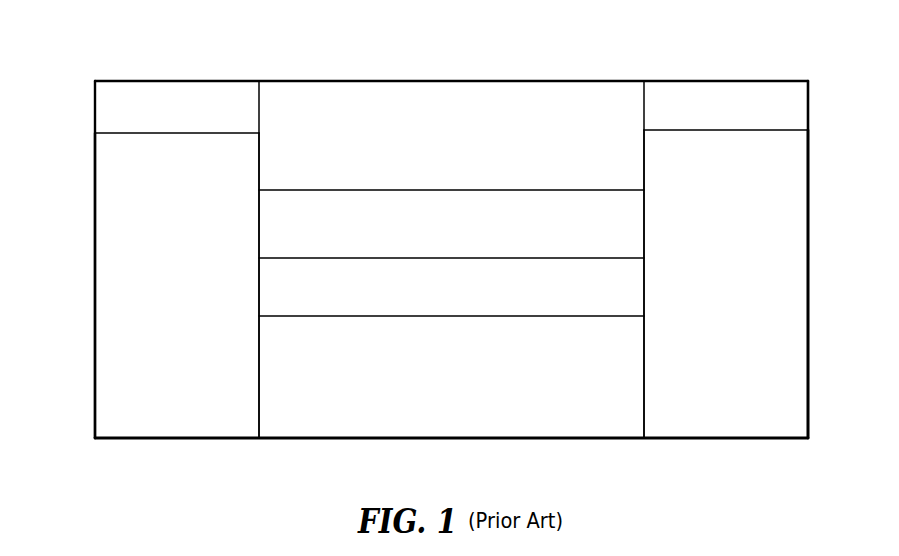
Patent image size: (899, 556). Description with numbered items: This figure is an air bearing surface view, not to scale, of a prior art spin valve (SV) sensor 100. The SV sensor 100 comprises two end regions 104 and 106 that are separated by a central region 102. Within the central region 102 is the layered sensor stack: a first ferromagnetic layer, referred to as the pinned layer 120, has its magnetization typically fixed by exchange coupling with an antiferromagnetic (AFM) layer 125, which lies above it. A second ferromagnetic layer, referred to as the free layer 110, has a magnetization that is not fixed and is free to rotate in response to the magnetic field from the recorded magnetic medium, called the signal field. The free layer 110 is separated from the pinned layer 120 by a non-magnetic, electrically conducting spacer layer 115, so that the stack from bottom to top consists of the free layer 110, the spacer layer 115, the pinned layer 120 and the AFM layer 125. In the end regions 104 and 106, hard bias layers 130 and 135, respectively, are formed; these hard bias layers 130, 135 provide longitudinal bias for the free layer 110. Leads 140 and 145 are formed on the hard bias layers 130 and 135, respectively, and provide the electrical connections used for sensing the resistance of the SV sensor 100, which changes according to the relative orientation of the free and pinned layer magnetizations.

The SV sensor 100 is at (618, 463).
The central region 102 is at (262, 65).
The end region 104 is at (257, 65).
The end region 106 is at (809, 65).
The free layer 110 is at (644, 385).
The spacer layer 115 is at (644, 296).
The pinned layer 120 is at (644, 226).
The antiferromagnetic (AFM) layer 125 is at (644, 163).
The hard bias layer 130 is at (101, 240).
The hard bias layer 135 is at (804, 237).
The lead 140 is at (100, 114).
The lead 145 is at (805, 104).